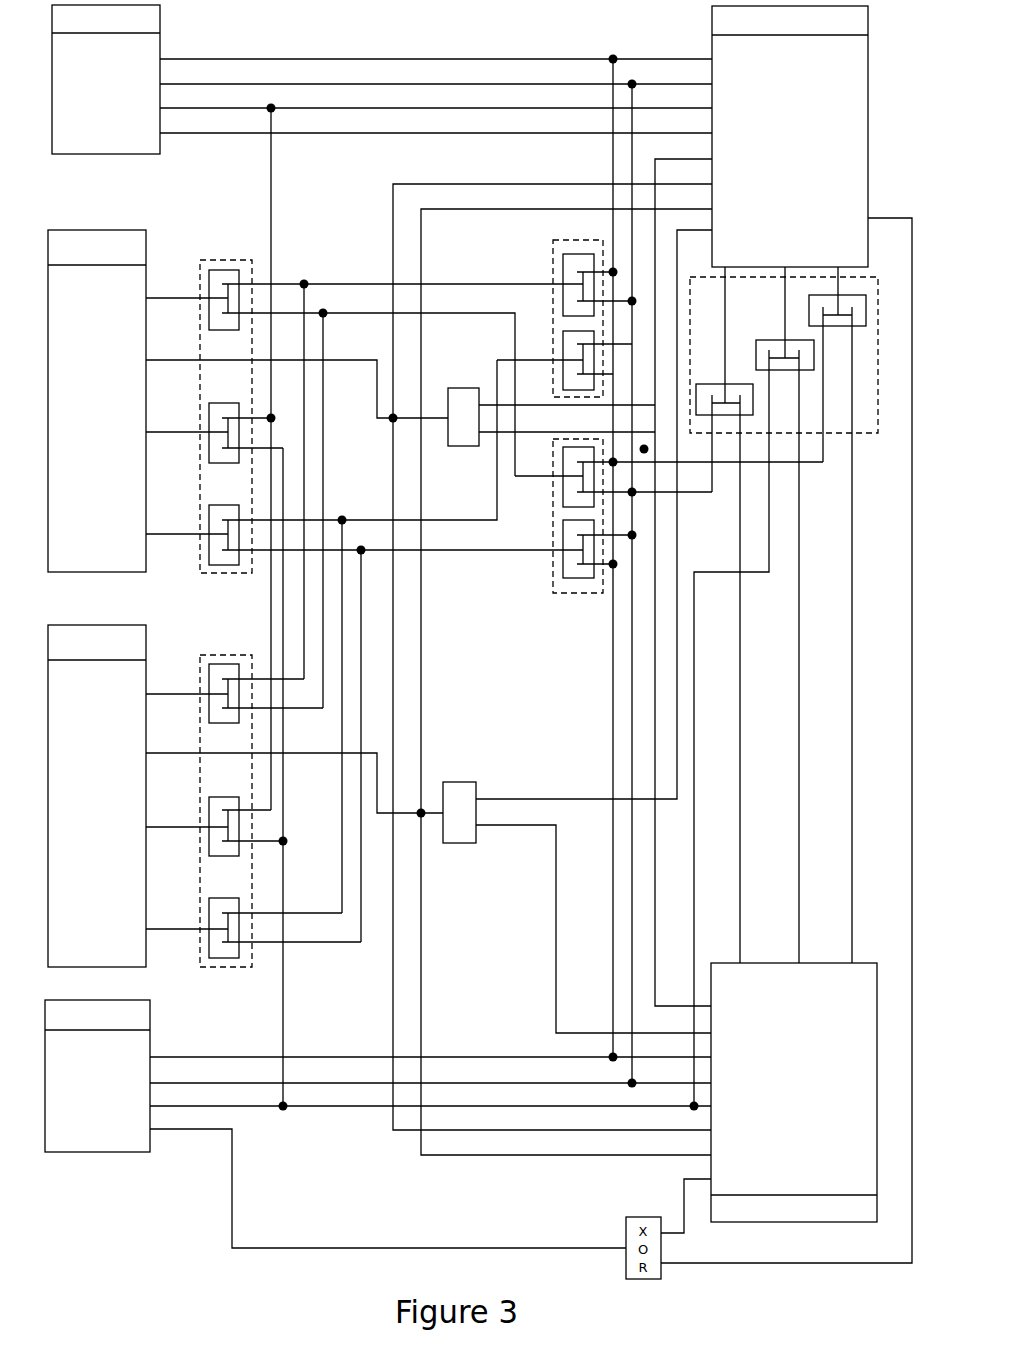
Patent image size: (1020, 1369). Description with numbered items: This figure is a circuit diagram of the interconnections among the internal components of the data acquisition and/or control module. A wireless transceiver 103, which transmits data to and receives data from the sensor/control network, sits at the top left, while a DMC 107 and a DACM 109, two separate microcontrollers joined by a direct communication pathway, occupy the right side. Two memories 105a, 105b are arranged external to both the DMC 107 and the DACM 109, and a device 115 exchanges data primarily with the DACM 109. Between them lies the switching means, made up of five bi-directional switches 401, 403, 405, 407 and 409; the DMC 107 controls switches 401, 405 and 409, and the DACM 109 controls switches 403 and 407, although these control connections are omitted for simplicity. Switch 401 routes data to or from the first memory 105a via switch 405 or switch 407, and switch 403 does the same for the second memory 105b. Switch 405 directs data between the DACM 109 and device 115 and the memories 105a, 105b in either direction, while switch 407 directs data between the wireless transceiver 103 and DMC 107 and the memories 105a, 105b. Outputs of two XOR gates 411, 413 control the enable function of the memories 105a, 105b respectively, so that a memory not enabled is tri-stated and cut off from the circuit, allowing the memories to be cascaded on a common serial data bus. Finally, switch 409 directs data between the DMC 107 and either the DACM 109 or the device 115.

The wireless transceiver 103 is at (99, 76).
The first memory 105a is at (112, 400).
The second memory 105b is at (112, 794).
The Data Management Controller (DMC) 107 is at (820, 100).
The Data Acquisition and/or Control Manager (DACM) 109 is at (833, 1076).
The device 115 is at (100, 1069).
The switch 401 is at (202, 260).
The switch 403 is at (201, 655).
The switch 405 is at (553, 593).
The switch 407 is at (565, 240).
The switch 409 is at (878, 400).
The XOR gate 411 is at (458, 446).
The XOR gate 413 is at (458, 843).